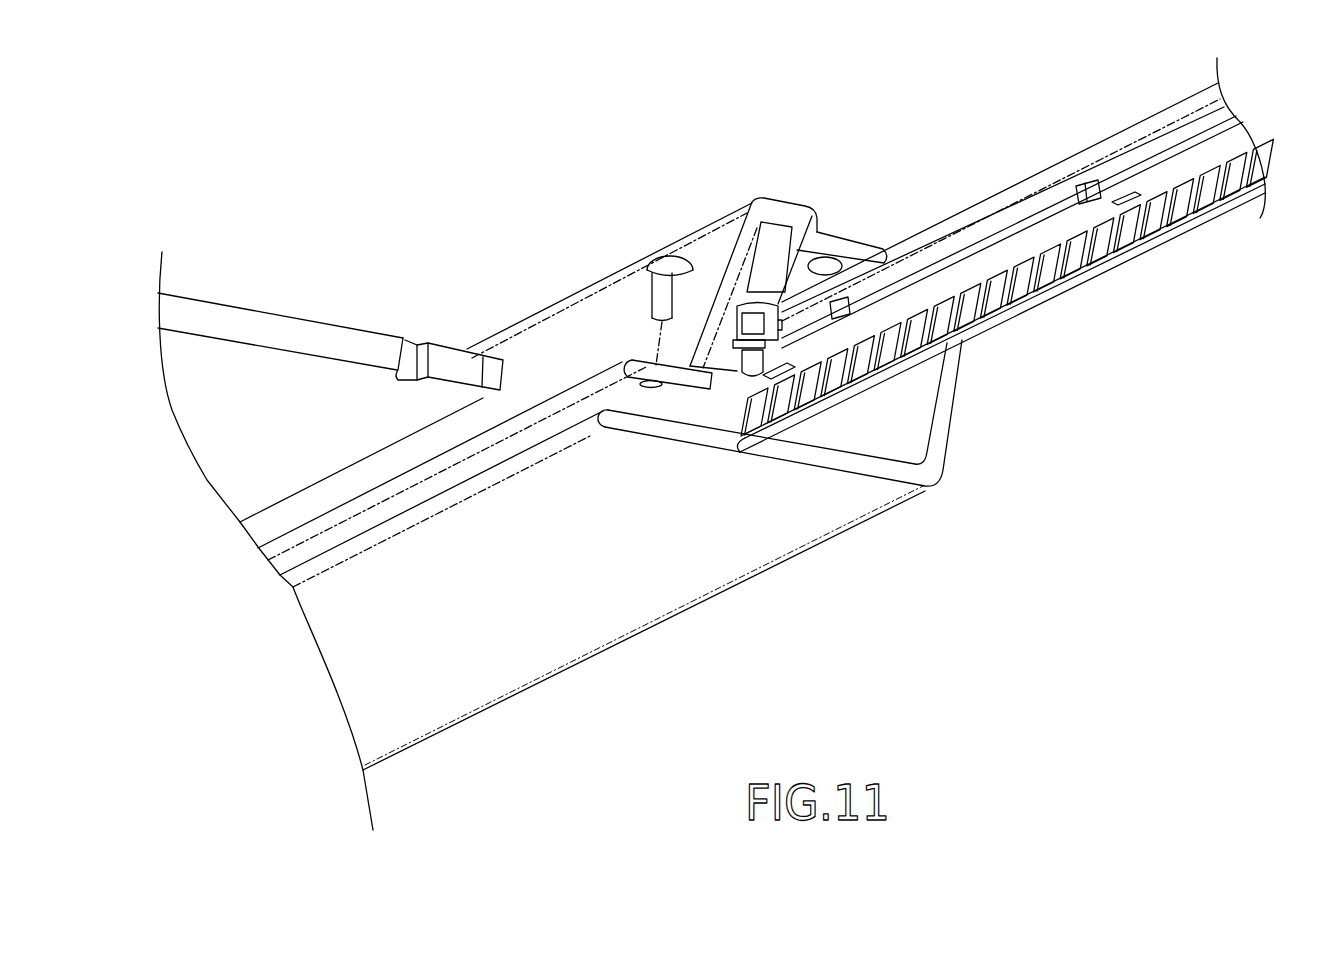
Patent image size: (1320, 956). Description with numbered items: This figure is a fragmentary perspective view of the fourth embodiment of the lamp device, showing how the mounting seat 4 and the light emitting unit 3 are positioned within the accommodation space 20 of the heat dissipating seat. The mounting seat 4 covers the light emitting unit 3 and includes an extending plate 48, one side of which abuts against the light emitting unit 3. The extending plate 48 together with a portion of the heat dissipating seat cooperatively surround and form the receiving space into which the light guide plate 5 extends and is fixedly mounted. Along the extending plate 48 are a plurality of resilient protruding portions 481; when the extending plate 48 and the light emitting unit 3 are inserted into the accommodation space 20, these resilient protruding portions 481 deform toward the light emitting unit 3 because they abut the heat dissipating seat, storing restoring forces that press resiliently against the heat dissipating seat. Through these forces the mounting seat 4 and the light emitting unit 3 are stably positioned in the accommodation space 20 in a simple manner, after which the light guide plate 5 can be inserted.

The light emitting unit 3 is at (1100, 300).
The mounting seat 4 is at (962, 230).
The light guide plate 5 is at (300, 287).
The accommodation space 20 is at (782, 258).
The extending plate 48 is at (1173, 172).
The resilient protruding portions 481 is at (1088, 180).